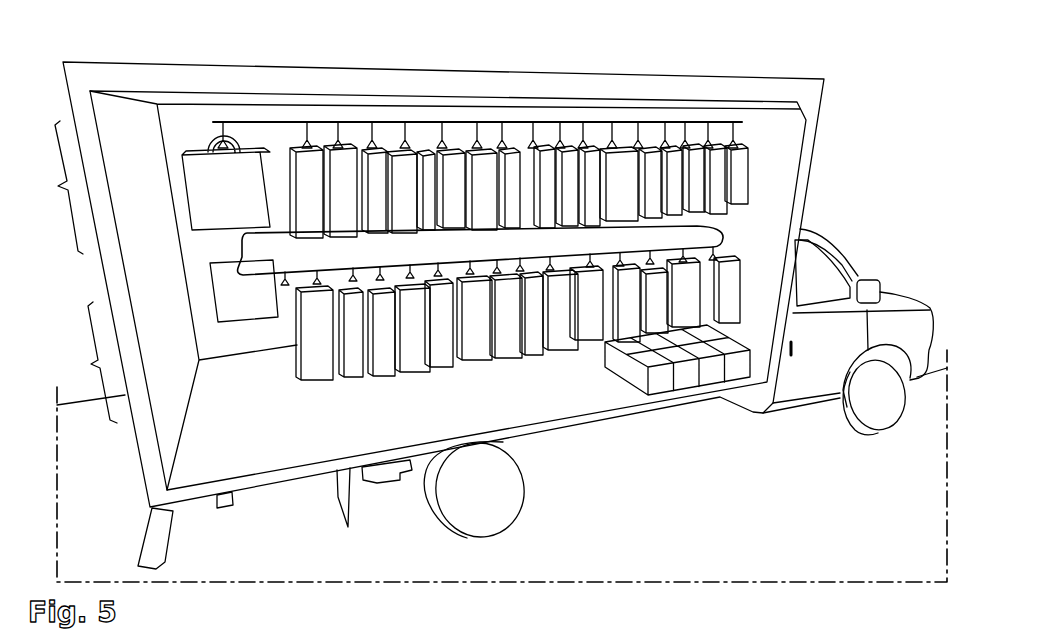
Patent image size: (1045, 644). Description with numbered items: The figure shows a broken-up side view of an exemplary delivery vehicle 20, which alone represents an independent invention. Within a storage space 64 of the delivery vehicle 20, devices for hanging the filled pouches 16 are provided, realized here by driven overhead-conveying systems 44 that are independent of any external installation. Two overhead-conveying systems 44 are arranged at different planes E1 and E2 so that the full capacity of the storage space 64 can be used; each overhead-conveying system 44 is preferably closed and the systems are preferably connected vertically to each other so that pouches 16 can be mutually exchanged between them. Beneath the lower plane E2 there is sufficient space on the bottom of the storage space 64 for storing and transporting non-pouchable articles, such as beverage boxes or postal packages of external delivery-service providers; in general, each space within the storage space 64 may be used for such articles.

The delivery vehicle 20 is at (868, 165).
The storage space 64 is at (138, 100).
The overhead-conveying system 44 is at (272, 115).
The pouches 16 is at (388, 375).
The plane E1 is at (57, 187).
The plane E2 is at (91, 362).